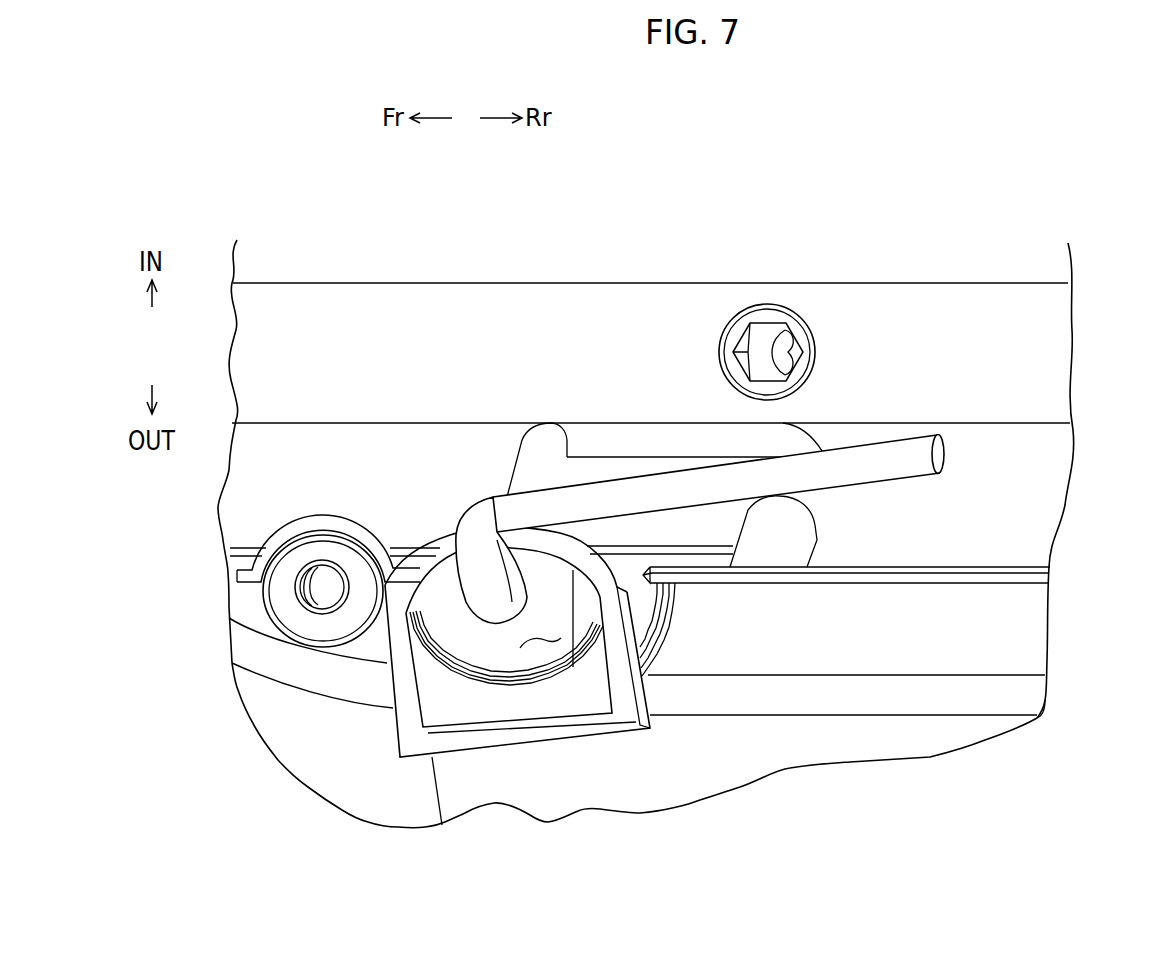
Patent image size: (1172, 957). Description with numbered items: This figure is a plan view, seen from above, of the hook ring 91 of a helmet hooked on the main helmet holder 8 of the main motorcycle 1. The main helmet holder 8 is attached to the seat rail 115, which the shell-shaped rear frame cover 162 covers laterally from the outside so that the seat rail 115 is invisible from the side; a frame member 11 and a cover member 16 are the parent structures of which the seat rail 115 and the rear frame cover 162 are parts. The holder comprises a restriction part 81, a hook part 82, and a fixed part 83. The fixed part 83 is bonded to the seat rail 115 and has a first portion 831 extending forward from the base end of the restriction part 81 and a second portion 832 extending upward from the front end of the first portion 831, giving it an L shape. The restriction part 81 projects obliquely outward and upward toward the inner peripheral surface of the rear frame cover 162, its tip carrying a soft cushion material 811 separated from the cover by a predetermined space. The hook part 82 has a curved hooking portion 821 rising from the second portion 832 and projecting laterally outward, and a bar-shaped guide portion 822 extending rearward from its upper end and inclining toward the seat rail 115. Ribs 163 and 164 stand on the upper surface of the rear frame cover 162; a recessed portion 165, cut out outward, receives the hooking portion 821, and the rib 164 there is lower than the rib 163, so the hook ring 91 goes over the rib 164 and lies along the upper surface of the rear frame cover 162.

The main motorcycle 1 is at (1112, 834).
The main helmet holder 8 is at (655, 338).
The restriction part 81 is at (817, 502).
The cushion material 811 is at (797, 548).
The hook part 82 is at (692, 409).
The hooking portion 821 is at (468, 538).
The guide portion 822 is at (903, 460).
The fixed part 83 is at (808, 205).
The first portion 831 is at (691, 435).
The second portion 832 is at (568, 449).
The hook ring 91 is at (620, 735).
The door inner panel 11 is at (651, 309).
The seat rail 115 is at (505, 283).
The lower body member 16 is at (687, 674).
The rear frame cover 162 is at (937, 647).
The rib 163 is at (975, 567).
The rib 164 is at (492, 683).
The recessed portion 165 is at (540, 648).